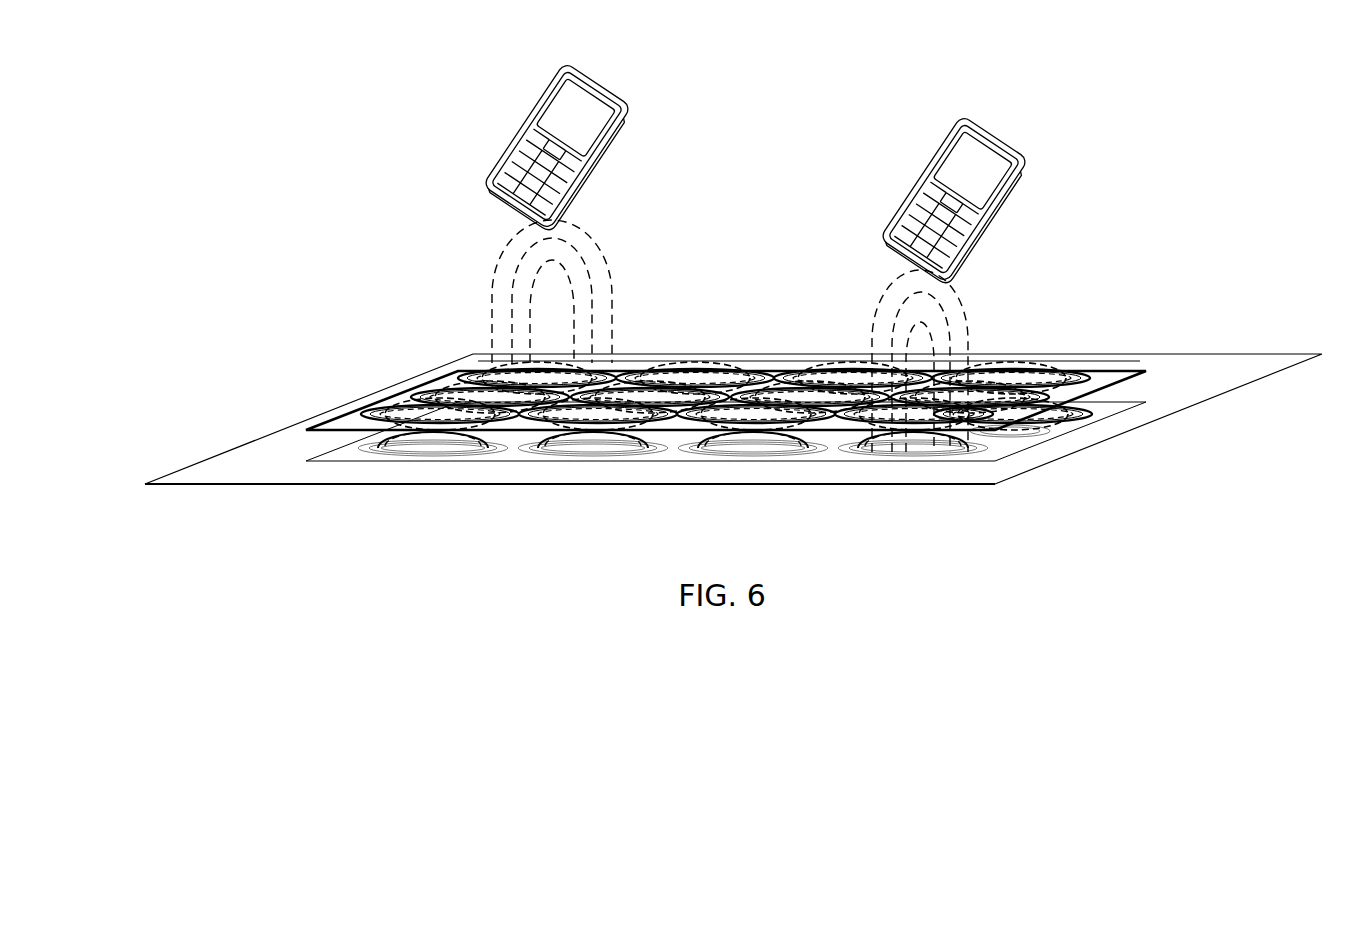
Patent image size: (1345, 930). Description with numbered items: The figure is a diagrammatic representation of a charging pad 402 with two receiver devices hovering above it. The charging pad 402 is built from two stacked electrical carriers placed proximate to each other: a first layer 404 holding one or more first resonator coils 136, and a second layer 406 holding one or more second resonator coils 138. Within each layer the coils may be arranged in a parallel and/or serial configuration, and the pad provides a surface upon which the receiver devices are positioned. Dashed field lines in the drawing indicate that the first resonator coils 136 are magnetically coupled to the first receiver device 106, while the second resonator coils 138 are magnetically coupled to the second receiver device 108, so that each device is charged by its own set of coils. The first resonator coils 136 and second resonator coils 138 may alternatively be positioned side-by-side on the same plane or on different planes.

The first receiver device 106 is at (595, 82).
The second receiver device 108 is at (991, 137).
The charging pad 402 is at (756, 355).
The first layer 404 is at (1132, 367).
The second layer 406 is at (1128, 403).
The first resonator coils 136 is at (1087, 380).
The second resonator coils 138 is at (1047, 432).